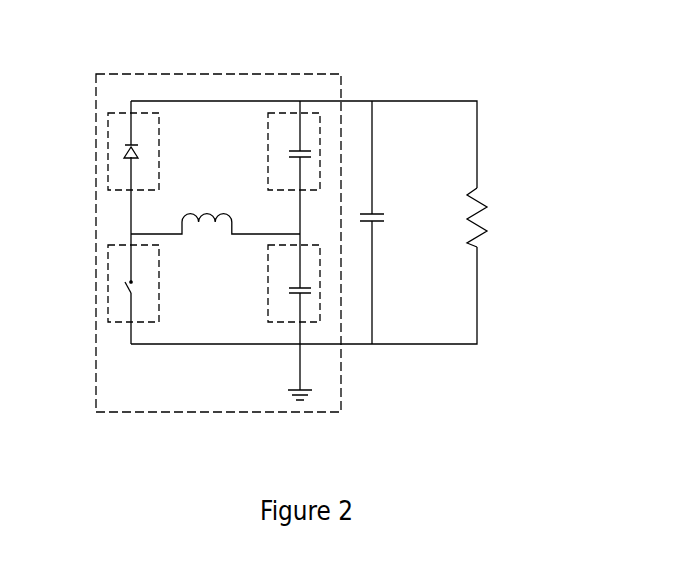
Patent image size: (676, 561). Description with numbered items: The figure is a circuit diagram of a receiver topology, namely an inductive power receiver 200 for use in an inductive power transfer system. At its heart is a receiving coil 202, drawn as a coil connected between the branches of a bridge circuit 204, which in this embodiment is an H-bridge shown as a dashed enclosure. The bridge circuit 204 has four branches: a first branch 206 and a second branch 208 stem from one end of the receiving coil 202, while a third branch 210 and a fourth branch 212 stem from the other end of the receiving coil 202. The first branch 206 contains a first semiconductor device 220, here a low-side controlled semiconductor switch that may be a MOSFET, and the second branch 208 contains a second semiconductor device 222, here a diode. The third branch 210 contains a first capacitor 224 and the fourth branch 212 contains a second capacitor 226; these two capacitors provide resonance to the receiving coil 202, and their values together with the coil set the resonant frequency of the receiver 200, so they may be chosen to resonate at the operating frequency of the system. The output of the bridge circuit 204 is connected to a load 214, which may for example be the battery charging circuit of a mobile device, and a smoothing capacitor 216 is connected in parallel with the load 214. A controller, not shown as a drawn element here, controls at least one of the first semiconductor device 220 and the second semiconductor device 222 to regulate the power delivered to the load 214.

The inductive power receiver 200 is at (526, 90).
The receiving coil 202 is at (206, 214).
The bridge circuit 204 is at (96, 360).
The first branch 206 is at (108, 264).
The second branch 208 is at (108, 123).
The third branch 210 is at (320, 283).
The fourth branch 212 is at (309, 113).
The load 214 is at (486, 206).
The smoothing capacitor 216 is at (375, 213).
The first semiconductor device 220 is at (130, 294).
The second semiconductor device 222 is at (128, 147).
The first capacitor 224 is at (305, 295).
The second capacitor 226 is at (290, 150).